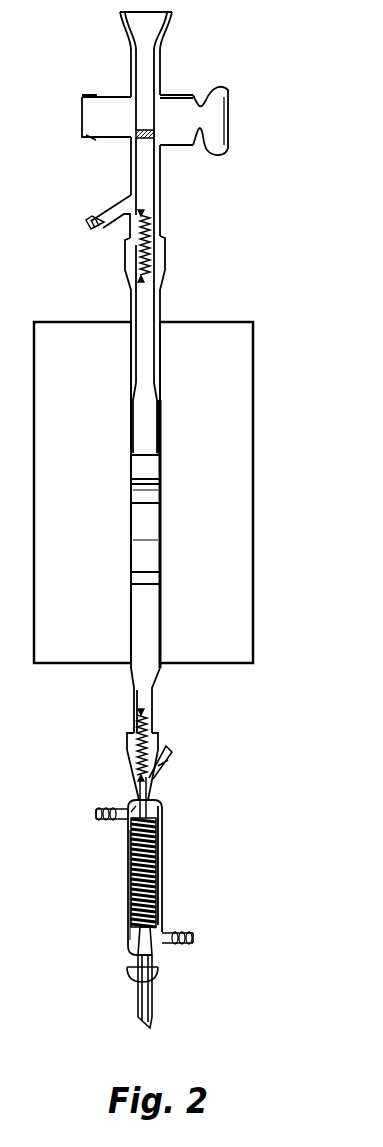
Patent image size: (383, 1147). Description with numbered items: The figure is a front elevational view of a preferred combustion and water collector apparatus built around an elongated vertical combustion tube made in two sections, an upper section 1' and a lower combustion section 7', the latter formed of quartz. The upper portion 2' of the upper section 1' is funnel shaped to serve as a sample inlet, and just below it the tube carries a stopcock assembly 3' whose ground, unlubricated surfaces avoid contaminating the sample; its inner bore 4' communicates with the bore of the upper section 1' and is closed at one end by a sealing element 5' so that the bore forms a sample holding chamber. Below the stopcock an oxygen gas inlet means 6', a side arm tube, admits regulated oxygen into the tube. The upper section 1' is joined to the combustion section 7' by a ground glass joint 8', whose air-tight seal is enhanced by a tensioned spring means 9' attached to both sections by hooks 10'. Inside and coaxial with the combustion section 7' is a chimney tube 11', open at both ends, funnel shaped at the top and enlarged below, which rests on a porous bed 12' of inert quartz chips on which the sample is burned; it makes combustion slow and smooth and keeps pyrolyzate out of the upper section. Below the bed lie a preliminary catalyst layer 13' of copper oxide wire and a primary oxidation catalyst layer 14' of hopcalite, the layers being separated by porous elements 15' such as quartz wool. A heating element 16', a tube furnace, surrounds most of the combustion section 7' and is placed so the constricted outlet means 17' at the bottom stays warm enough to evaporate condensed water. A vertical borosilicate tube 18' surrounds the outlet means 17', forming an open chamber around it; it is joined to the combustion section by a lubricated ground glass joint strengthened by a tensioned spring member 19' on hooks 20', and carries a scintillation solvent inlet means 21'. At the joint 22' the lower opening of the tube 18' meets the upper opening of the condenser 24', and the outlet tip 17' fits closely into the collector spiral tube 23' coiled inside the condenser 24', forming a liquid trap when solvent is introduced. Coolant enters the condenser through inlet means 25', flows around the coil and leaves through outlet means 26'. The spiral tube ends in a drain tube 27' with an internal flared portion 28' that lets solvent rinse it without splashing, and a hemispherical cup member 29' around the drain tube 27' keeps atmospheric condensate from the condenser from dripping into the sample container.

The upper section of combustion tube 1' is at (120, 216).
The upper portion 2' is at (156, 33).
The stopcock assembly 3' is at (226, 112).
The inner bore 4' is at (137, 104).
The sealing element 5' is at (165, 151).
The oxygen gas inlet means 6' is at (107, 226).
The combustion section 7' is at (112, 492).
The ground glass joint 8' is at (162, 452).
The tensioned spring means 9' is at (169, 245).
The hooks 10' is at (140, 253).
The chimney tube 11' is at (168, 399).
The porous bed 12' is at (171, 561).
The preliminary catalyst layer 13' is at (120, 503).
The primary oxidation catalyst layer 14' is at (169, 548).
The porous elements 15' is at (142, 539).
The heating element 16' is at (166, 492).
The outlet means 17' is at (165, 877).
The vertical tube 18' is at (171, 797).
The tensioned spring member 19' is at (120, 734).
The hooks 20' is at (140, 742).
The scintillation solvent inlet means 21' is at (186, 762).
The joint 22' is at (115, 836).
The collector spiral tube 23' is at (169, 872).
The condenser 24' is at (104, 885).
The inlet means 25' is at (190, 920).
The outlet means 26' is at (86, 824).
The drain tube 27' is at (120, 950).
The internal flared portion 28' is at (122, 1000).
The hemispherical cup member 29' is at (170, 978).